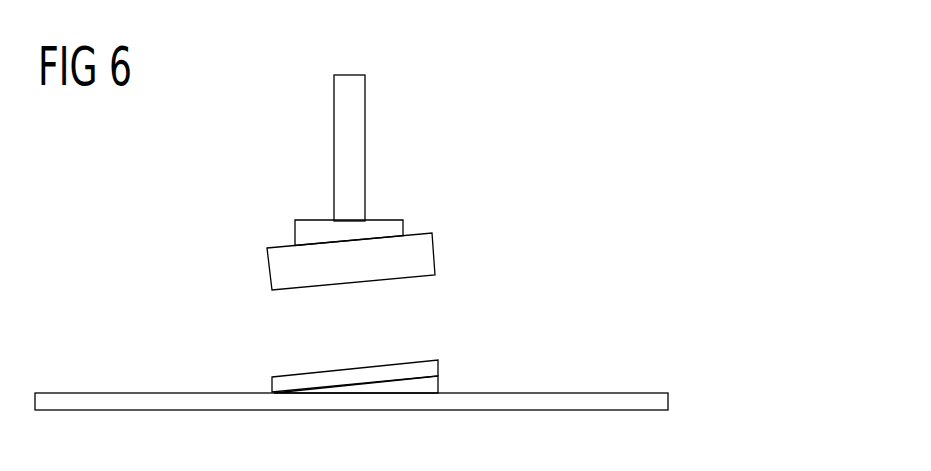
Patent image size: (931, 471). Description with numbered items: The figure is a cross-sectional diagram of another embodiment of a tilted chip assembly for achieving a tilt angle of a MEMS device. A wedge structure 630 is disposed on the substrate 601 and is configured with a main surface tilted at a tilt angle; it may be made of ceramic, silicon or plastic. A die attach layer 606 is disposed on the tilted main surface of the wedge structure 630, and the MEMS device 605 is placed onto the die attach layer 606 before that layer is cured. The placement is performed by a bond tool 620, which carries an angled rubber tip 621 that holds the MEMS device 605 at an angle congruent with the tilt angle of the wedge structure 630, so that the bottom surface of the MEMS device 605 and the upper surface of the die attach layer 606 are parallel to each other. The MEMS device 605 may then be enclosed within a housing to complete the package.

The bond tool 620 is at (367, 147).
The angled rubber tip 621 is at (317, 220).
The MEMS device 605 is at (437, 252).
The substrate 601 is at (585, 393).
The die attach layer 606 is at (312, 382).
The wedge structure 630 is at (441, 385).